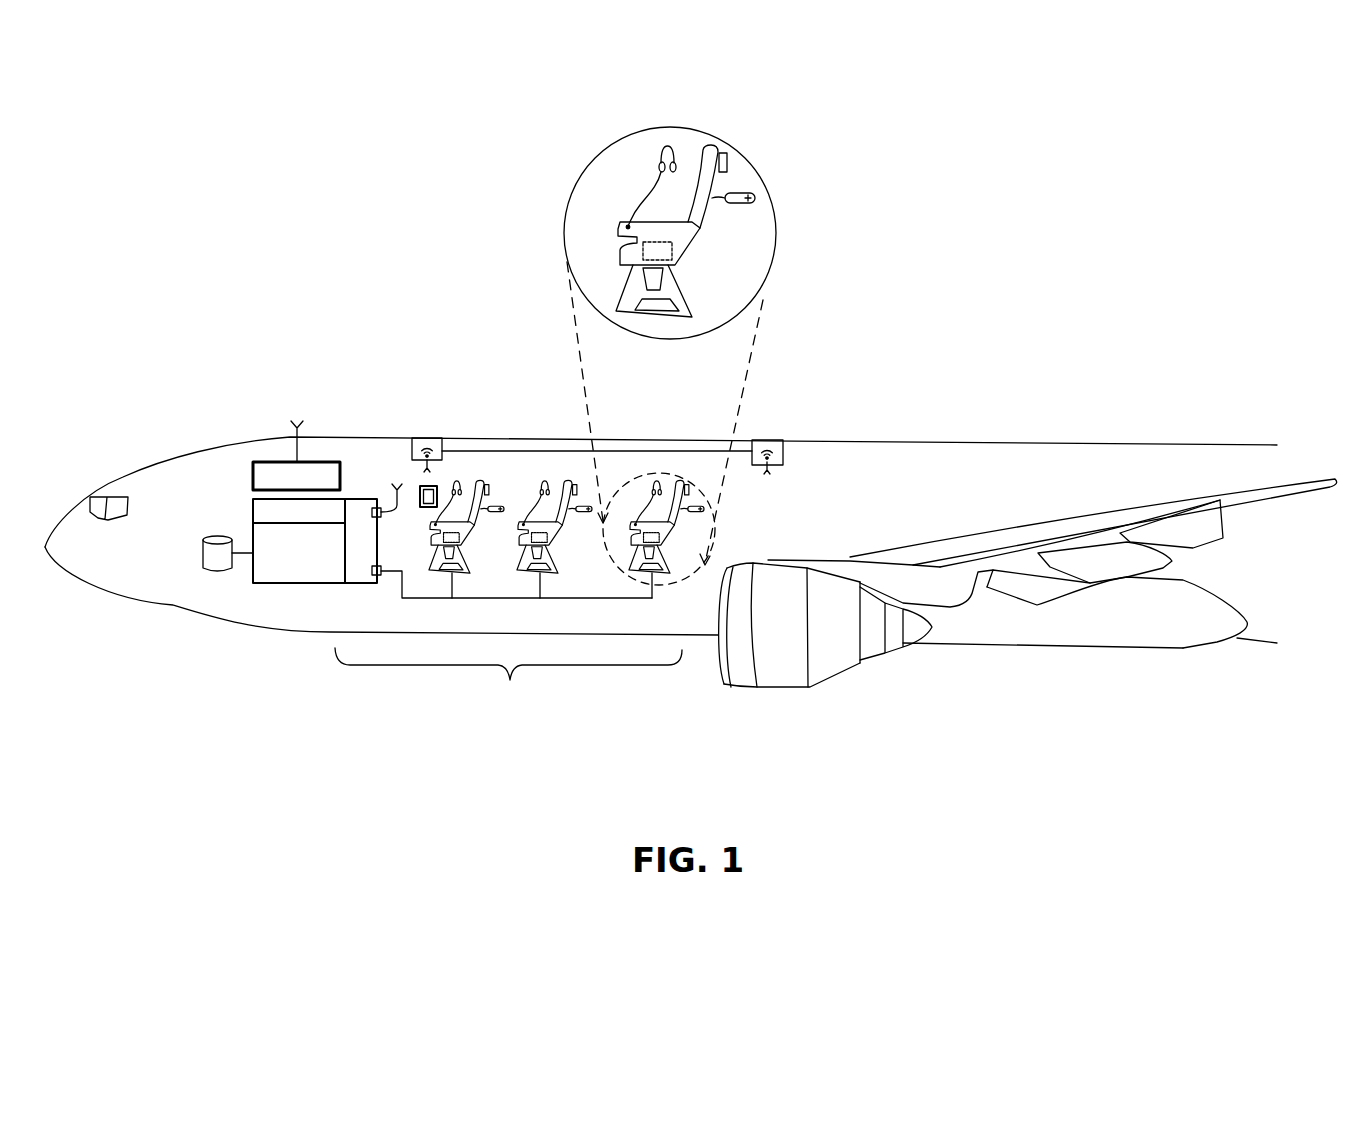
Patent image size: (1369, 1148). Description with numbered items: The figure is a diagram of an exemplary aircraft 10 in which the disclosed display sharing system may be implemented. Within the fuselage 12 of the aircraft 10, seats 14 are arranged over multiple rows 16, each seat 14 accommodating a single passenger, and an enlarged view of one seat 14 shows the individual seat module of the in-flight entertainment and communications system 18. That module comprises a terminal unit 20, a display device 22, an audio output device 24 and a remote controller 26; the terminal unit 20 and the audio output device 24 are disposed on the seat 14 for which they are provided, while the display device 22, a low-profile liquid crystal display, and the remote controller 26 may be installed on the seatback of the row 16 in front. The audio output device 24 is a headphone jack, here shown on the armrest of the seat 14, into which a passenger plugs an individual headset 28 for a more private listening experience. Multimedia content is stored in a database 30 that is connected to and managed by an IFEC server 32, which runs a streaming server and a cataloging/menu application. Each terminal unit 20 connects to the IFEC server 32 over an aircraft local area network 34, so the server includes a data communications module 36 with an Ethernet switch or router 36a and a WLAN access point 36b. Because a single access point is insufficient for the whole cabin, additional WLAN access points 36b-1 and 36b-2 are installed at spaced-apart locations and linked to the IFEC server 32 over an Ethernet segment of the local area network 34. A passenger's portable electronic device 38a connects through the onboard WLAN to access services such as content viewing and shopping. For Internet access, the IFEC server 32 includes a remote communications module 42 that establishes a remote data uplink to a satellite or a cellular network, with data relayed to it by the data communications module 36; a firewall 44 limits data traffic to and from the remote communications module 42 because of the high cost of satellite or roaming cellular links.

The aircraft 10 is at (970, 440).
The fuselage 12 is at (620, 479).
The seat 14 is at (481, 483).
The rows 16 is at (508, 679).
The in-flight entertainment and communications (IFEC) system 18 is at (230, 637).
The terminal unit 20 is at (620, 266).
The display device 22 is at (728, 163).
The audio output device 24 is at (626, 225).
The remote controller 26 is at (735, 204).
The headset 28 is at (658, 166).
The database 30 is at (218, 536).
The IFEC server 32 is at (295, 571).
The aircraft local area network 34 is at (524, 598).
The data communications module 36 is at (355, 497).
The Ethernet data communications module 36a is at (381, 576).
The WLAN access point 36b is at (382, 515).
The additional WLAN access point 36b-1 is at (428, 437).
The additional WLAN access point 36b-2 is at (771, 440).
The personal electronic device 38a is at (420, 488).
The remote communications module 42 is at (287, 461).
The firewall 44 is at (250, 500).